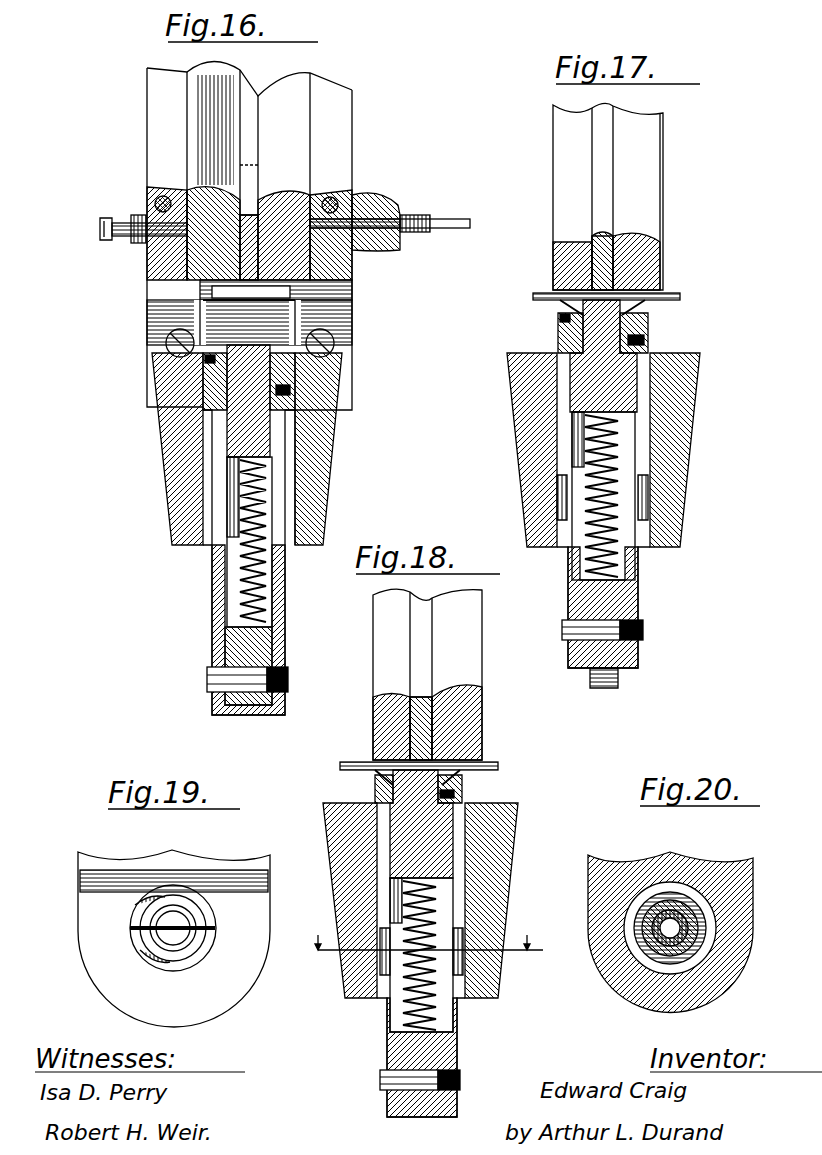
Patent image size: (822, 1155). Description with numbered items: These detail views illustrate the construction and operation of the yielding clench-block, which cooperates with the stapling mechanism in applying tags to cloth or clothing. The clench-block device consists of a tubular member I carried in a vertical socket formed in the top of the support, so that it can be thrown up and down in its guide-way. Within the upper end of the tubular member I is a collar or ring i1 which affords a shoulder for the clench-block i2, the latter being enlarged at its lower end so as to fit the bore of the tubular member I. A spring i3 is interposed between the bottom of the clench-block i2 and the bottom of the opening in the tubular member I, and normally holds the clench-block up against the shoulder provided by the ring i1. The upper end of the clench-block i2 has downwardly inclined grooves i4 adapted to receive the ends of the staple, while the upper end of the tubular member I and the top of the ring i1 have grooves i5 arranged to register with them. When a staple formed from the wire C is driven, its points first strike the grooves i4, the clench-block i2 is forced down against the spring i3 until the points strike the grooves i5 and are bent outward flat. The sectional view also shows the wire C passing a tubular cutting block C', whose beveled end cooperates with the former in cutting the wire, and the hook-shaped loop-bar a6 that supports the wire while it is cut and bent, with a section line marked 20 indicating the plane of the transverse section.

In FIG. 16, the tubular member I is at (285, 455).
In FIG. 17, the tubular member I is at (640, 437).
In FIG. 18, the tubular member I is at (565, 985).
In FIG. 19, the tubular member I is at (174, 938).
In FIG. 20, the tubular member I is at (640, 942).
In FIG. 16, the collar or ring i1 is at (282, 377).
In FIG. 17, the collar or ring i1 is at (650, 340).
In FIG. 18, the collar or ring i1 is at (385, 870).
In FIG. 19, the collar or ring i1 is at (192, 924).
In FIG. 16, the clench-block i2 is at (248, 425).
In FIG. 17, the clench-block i2 is at (590, 392).
In FIG. 18, the clench-block i2 is at (410, 840).
In FIG. 19, the clench-block i2 is at (180, 950).
In FIG. 16, the spring i3 is at (268, 493).
In FIG. 17, the spring i3 is at (625, 530).
In FIG. 18, the spring i3 is at (421, 955).
In FIG. 20, the spring i3 is at (690, 928).
In FIG. 16, the downwardly inclined grooves i4 is at (257, 352).
In FIG. 17, the downwardly inclined grooves i4 is at (610, 292).
In FIG. 18, the downwardly inclined grooves i4 is at (432, 760).
In FIG. 19, the downwardly inclined grooves i4 is at (165, 937).
In FIG. 16, the grooves i5 is at (232, 355).
In FIG. 17, the grooves i5 is at (645, 308).
In FIG. 18, the grooves i5 is at (458, 782).
In FIG. 19, the grooves i5 is at (205, 938).
In FIG. 16, the wire C is at (391, 213).
In FIG. 16, the cutting block C' is at (405, 190).
In FIG. 16, the loop-bar a6 is at (352, 290).
In FIG. 18, the section line 20- 20 is at (426, 947).